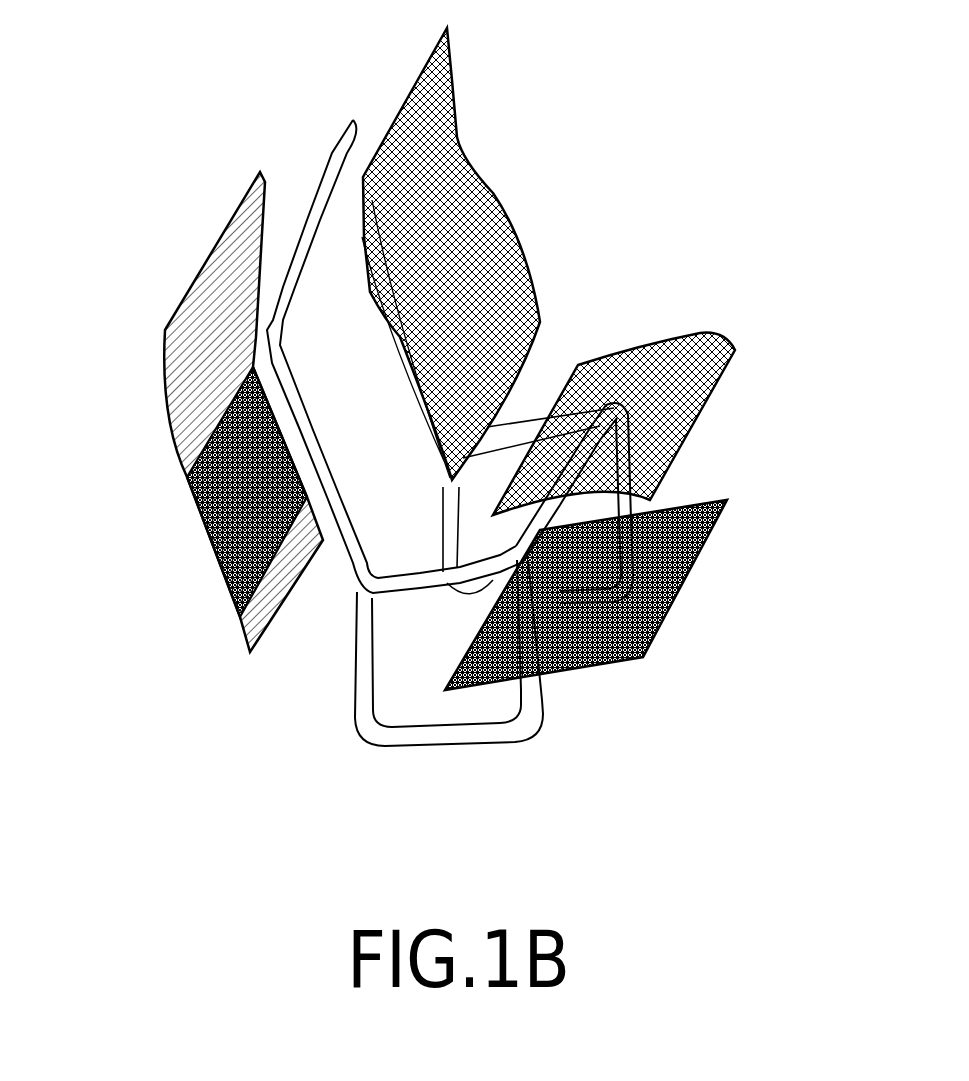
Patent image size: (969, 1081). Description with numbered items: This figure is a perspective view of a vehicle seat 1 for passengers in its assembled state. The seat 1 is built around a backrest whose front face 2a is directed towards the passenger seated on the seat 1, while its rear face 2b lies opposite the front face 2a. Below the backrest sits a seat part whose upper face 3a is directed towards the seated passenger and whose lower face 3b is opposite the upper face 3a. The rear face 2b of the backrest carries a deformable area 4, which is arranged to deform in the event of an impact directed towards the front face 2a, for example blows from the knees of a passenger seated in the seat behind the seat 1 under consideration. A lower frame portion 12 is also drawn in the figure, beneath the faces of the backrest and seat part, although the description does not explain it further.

The vehicle seat 1 is at (321, 807).
The front face 2a is at (490, 287).
The rear face 2b is at (227, 608).
The upper face 3a is at (667, 357).
The lower face 3b is at (683, 560).
The deformable area 4 is at (207, 535).
The lower loop of wire frame 12 is at (365, 658).